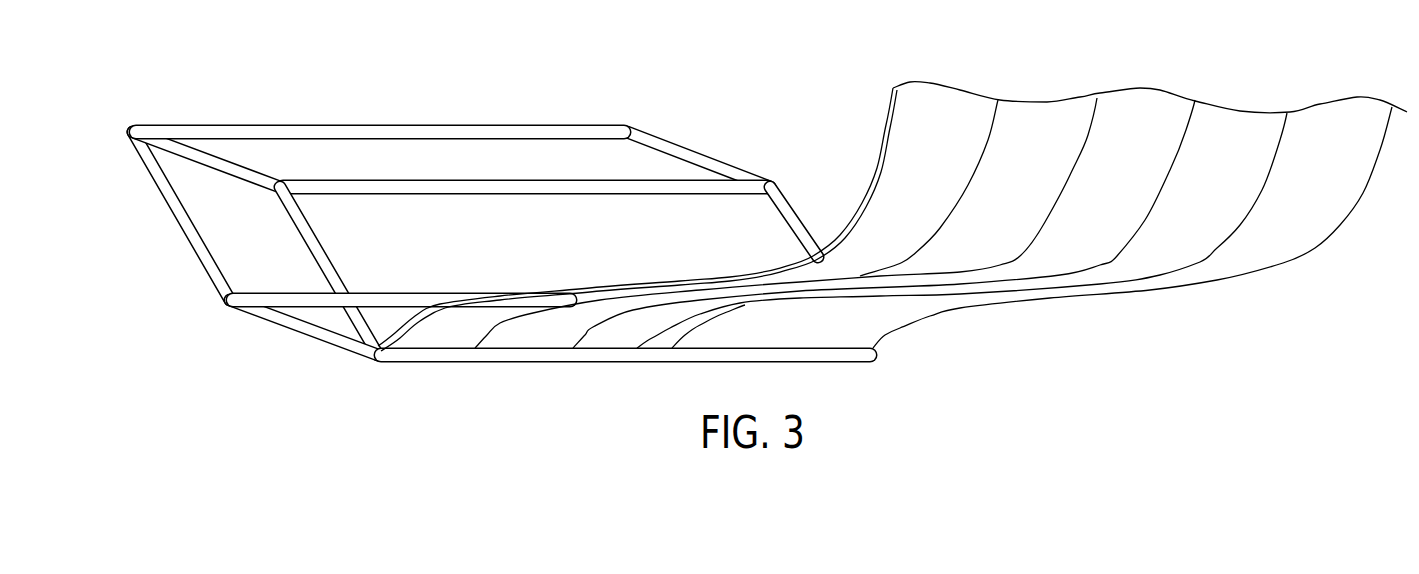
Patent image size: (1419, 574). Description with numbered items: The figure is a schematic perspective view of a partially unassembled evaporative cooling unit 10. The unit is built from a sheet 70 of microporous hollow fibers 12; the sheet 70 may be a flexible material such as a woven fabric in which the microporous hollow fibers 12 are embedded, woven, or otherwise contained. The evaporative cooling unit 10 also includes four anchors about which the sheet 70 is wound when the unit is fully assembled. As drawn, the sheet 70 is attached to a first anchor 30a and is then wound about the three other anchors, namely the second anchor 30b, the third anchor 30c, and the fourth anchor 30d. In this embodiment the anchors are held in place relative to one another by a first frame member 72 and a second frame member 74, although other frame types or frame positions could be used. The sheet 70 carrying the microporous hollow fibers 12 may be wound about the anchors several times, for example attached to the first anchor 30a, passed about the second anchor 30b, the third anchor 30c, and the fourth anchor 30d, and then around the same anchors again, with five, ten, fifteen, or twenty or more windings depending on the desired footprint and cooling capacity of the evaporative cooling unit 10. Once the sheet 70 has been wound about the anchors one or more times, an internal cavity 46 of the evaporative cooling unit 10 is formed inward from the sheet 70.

The evaporative cooling unit 10 is at (518, 72).
The microporous hollow fibers 12 is at (594, 328).
The first anchor 30a is at (445, 364).
The second anchor 30b is at (427, 181).
The third anchor 30c is at (300, 123).
The fourth anchor 30d is at (428, 292).
The internal cavity 46 is at (300, 263).
The sheet 70 is at (1130, 253).
The first frame member 72 is at (198, 235).
The second frame member 74 is at (650, 166).